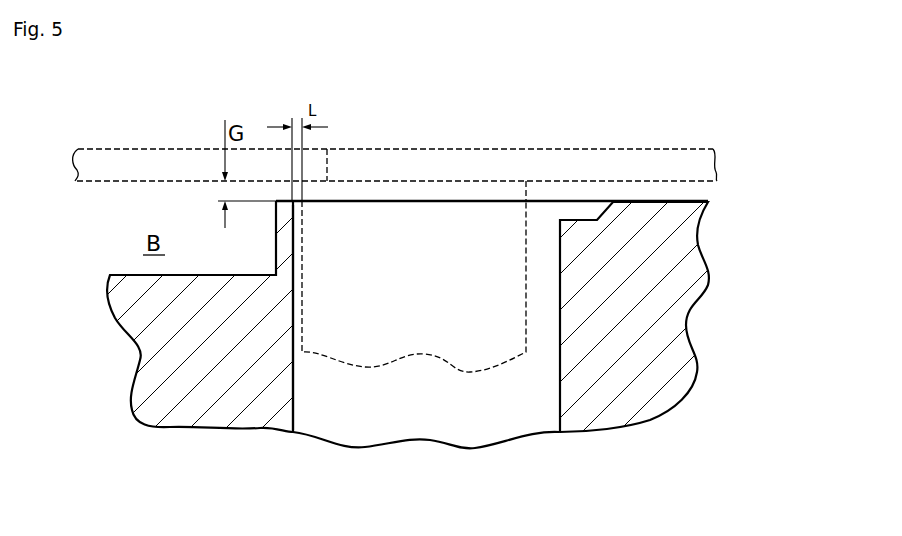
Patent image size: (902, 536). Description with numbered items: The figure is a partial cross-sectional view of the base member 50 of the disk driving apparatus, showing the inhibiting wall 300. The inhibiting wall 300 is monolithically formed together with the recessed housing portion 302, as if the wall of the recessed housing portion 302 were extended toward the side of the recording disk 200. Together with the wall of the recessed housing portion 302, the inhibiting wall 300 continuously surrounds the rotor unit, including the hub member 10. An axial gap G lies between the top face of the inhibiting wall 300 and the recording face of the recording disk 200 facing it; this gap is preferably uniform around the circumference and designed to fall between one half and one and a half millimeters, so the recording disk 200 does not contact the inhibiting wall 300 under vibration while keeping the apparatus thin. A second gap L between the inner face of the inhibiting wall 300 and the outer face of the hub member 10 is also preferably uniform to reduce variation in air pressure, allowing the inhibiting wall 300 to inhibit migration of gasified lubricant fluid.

The hub member 10 is at (526, 270).
The base member 50 is at (607, 407).
The recording disk 200 is at (614, 160).
The inhibiting wall 300 is at (285, 237).
The recessed housing portion 302 is at (296, 376).